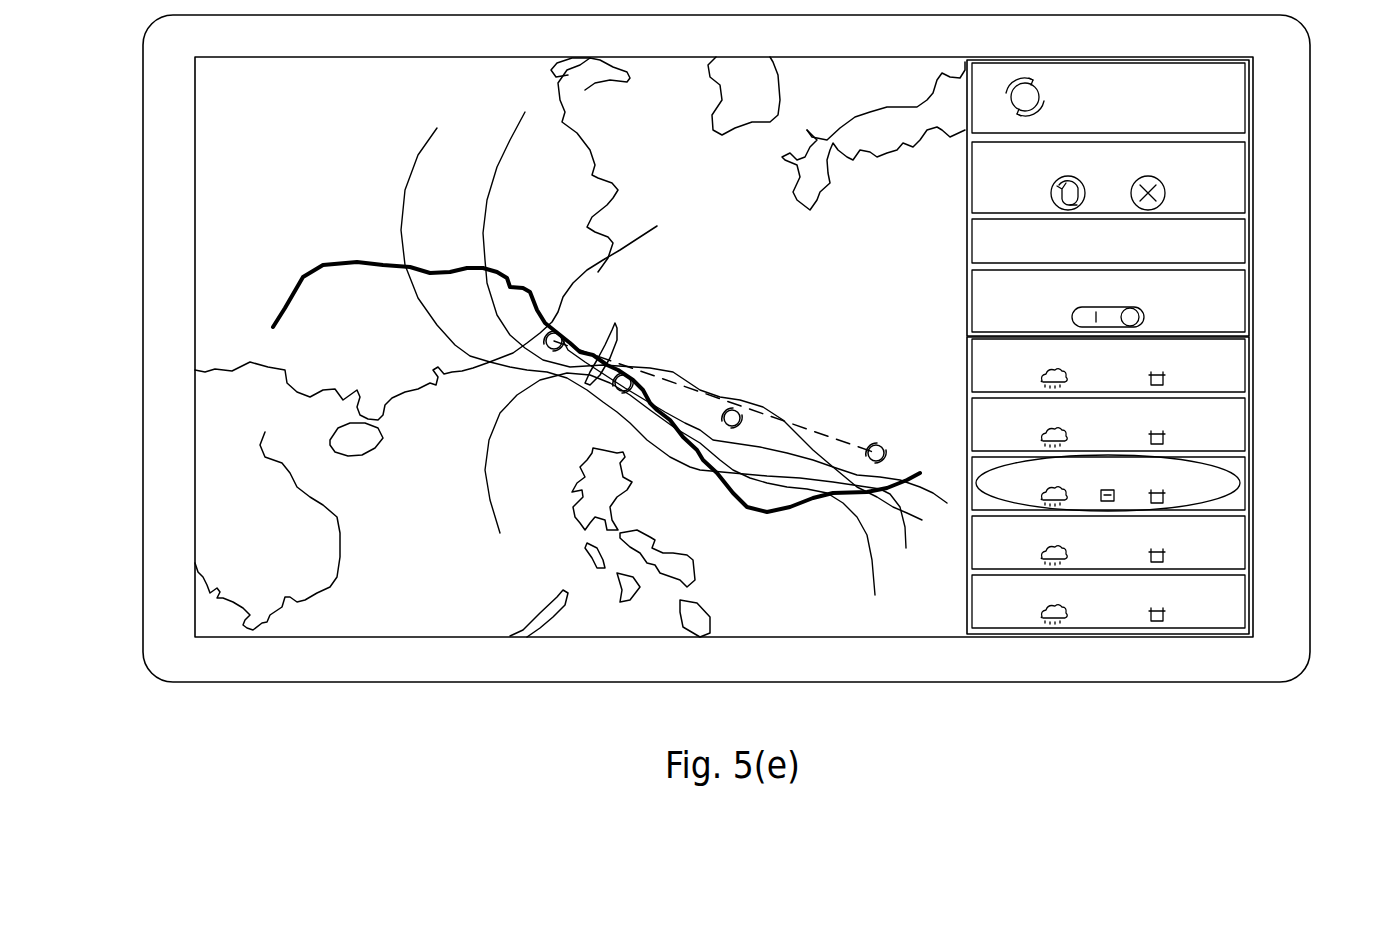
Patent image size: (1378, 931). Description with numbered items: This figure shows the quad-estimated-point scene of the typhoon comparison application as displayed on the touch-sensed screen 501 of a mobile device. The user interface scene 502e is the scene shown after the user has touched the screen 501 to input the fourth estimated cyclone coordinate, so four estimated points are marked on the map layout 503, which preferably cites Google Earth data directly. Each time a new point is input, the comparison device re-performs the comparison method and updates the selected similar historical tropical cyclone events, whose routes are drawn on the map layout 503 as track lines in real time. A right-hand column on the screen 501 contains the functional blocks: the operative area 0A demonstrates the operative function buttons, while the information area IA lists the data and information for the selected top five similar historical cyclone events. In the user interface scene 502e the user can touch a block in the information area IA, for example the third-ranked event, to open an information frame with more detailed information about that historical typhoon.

The touch-sensed screen 501 is at (1186, 728).
The user interface scene 502e is at (187, 220).
The map layout 503 is at (320, 463).
The operative area 0A is at (1254, 212).
The information area IA is at (1254, 408).